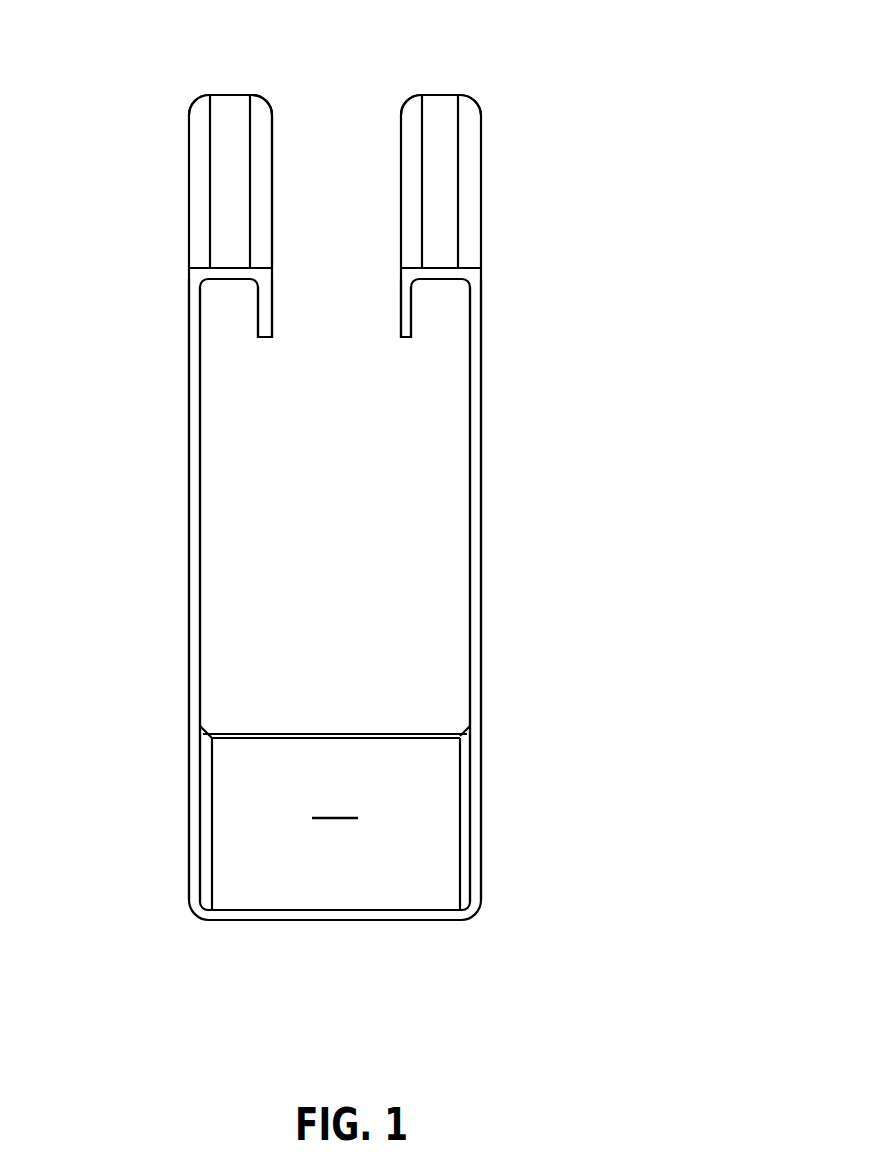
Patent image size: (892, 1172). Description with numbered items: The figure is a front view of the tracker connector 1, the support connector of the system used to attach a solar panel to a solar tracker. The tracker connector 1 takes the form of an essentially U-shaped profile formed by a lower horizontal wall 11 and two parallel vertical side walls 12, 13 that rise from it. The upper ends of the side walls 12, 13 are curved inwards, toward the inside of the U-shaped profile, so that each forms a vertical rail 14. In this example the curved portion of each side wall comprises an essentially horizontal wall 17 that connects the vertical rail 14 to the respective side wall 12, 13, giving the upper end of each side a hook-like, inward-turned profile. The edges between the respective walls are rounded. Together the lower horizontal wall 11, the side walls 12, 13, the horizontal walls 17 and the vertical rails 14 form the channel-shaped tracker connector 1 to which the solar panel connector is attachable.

The tracker connector 1 is at (717, 258).
The lower horizontal wall 11 is at (377, 868).
The vertical side wall 12 is at (479, 588).
The vertical side wall 13 is at (188, 570).
The vertical rail 14 is at (260, 322).
The horizontal wall 17 is at (235, 158).